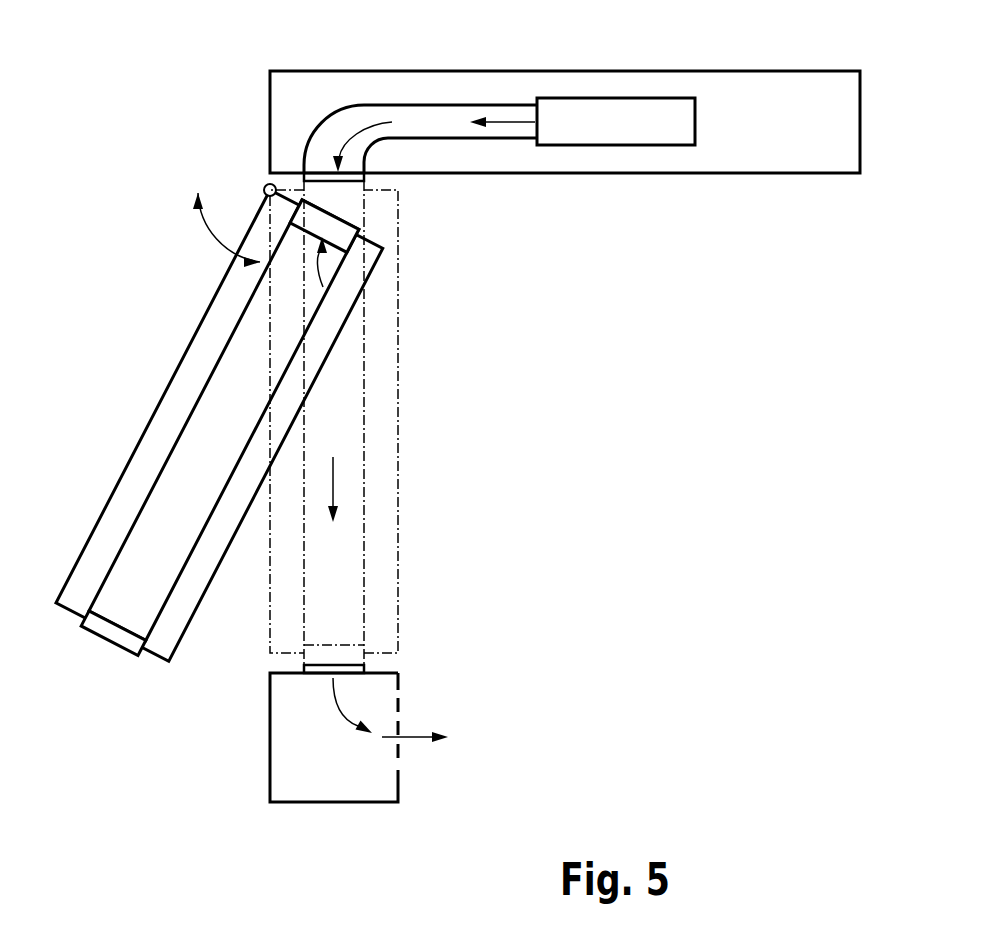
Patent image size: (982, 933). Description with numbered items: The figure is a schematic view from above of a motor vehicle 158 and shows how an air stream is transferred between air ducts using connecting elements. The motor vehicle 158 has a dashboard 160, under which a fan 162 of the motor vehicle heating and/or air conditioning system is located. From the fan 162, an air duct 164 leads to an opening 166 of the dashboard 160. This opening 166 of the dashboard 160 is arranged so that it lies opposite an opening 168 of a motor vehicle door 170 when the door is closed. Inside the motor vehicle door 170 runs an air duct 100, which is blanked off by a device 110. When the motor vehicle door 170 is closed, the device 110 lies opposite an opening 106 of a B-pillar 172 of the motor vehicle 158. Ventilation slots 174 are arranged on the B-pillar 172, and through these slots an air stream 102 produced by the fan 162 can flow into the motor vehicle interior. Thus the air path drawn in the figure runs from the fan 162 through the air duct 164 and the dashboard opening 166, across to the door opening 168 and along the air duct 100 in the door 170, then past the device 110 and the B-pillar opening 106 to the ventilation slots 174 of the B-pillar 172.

The motor vehicle 158 is at (202, 119).
The air stream 102 is at (362, 123).
The air duct 164 is at (455, 105).
The fan 162 is at (585, 98).
The dashboard 160 is at (713, 71).
The opening of dashboard 166 is at (350, 182).
The opening of motor vehicle door 168 is at (342, 300).
The motor vehicle door 170 is at (165, 392).
The air duct 100 is at (165, 517).
The device 110 is at (120, 640).
The opening of B-pillar 106 is at (363, 689).
The B-pillar 172 is at (270, 763).
The ventilation slots 174 is at (403, 752).